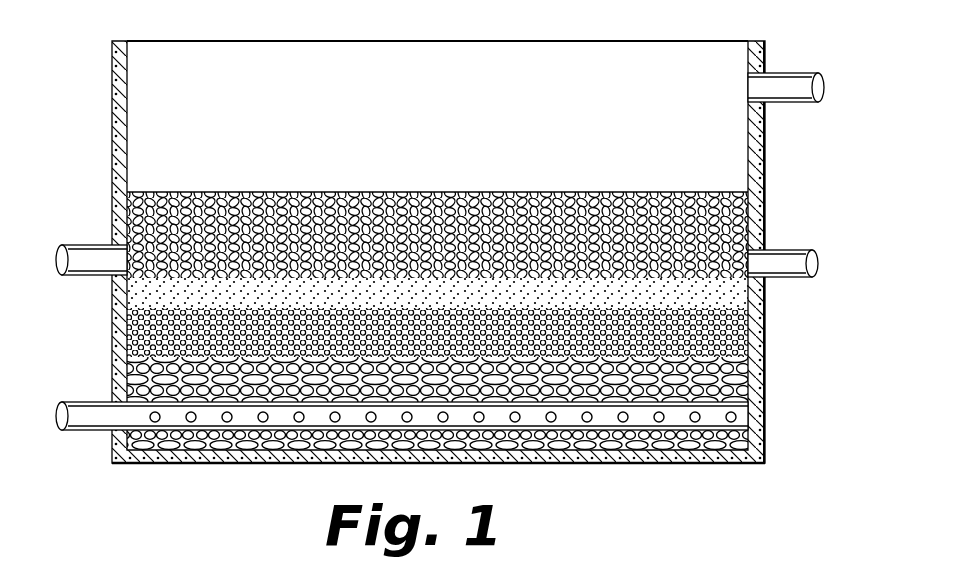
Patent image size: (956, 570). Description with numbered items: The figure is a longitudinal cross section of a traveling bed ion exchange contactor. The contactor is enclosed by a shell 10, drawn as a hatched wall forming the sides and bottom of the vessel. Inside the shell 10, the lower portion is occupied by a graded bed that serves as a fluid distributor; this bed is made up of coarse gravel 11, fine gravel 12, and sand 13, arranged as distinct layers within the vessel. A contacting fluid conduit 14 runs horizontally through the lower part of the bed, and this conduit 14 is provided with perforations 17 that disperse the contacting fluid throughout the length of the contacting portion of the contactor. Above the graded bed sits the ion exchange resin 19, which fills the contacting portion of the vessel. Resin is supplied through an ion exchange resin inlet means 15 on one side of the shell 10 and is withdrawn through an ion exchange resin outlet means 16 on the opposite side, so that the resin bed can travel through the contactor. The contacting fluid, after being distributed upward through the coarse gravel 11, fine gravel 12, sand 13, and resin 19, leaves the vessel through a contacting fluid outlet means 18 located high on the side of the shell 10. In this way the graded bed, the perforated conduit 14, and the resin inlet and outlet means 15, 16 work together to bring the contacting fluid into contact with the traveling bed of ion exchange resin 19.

The shell 10 is at (150, 462).
The coarse gravel 11 is at (752, 378).
The fine gravel 12 is at (130, 336).
The sand 13 is at (742, 296).
The contacting fluid conduit 14 is at (92, 418).
The ion exchange resin inlet means 15 is at (82, 256).
The ion exchange resin outlet means 16 is at (797, 260).
The perforations 17 is at (695, 424).
The contacting fluid outlet means 18 is at (785, 82).
The ion exchange resin 19 is at (740, 212).